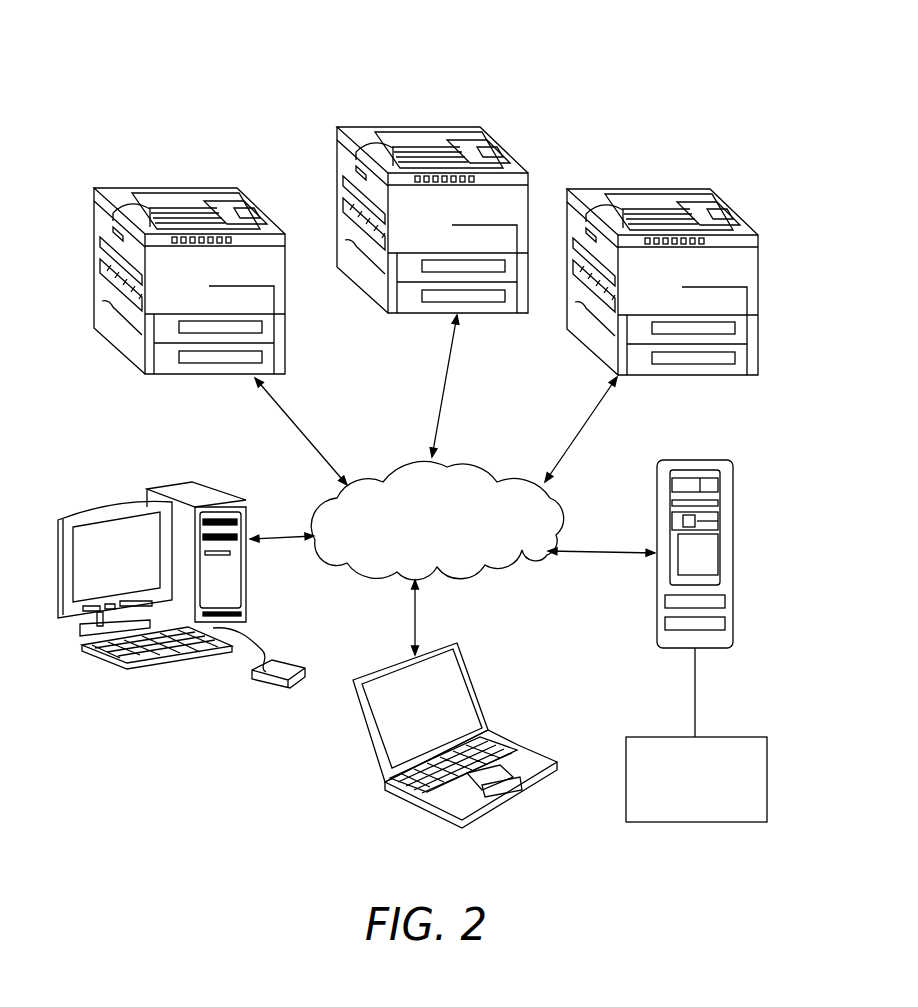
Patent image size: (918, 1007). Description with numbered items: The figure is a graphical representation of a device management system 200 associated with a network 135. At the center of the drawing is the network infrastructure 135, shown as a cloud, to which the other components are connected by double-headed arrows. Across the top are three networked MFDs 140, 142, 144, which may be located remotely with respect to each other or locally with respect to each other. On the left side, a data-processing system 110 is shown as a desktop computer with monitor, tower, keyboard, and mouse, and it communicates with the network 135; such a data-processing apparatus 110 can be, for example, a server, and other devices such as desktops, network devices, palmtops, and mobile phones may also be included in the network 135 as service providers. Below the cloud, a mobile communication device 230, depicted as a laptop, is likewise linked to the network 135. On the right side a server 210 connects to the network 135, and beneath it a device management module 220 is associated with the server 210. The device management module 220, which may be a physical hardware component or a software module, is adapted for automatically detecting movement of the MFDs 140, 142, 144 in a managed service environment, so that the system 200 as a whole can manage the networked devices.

The device management system 200 is at (527, 56).
The data-processing system 110 is at (163, 485).
The network 135 is at (467, 464).
The MFD 140 is at (437, 124).
The MFD 142 is at (193, 188).
The MFD 144 is at (667, 188).
The server 210 is at (733, 555).
The device management module 220 is at (698, 824).
The mobile communication device 230 is at (378, 737).